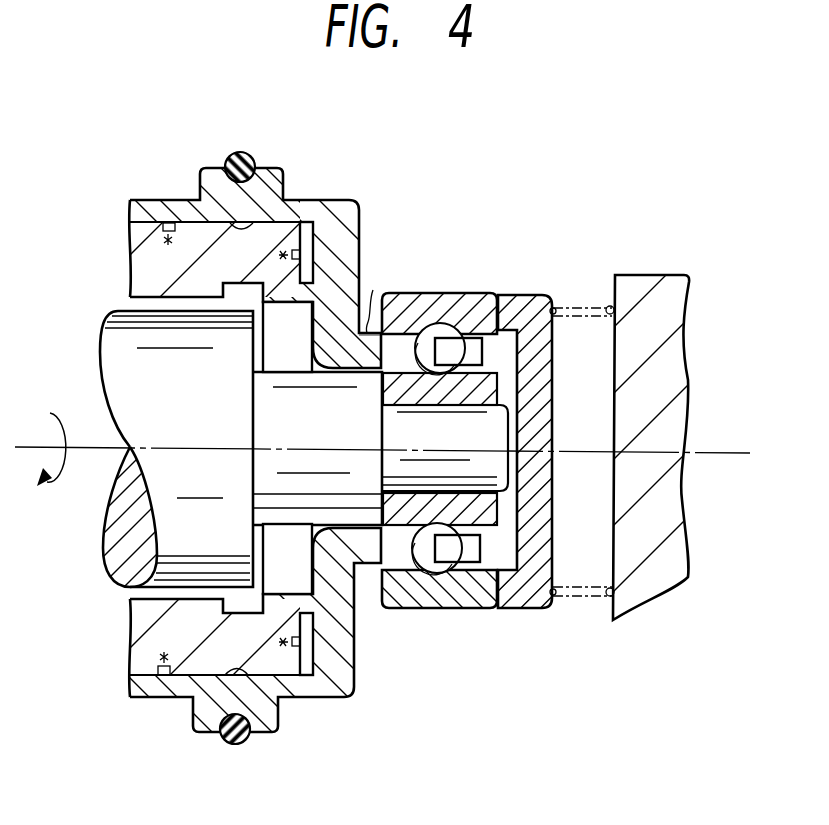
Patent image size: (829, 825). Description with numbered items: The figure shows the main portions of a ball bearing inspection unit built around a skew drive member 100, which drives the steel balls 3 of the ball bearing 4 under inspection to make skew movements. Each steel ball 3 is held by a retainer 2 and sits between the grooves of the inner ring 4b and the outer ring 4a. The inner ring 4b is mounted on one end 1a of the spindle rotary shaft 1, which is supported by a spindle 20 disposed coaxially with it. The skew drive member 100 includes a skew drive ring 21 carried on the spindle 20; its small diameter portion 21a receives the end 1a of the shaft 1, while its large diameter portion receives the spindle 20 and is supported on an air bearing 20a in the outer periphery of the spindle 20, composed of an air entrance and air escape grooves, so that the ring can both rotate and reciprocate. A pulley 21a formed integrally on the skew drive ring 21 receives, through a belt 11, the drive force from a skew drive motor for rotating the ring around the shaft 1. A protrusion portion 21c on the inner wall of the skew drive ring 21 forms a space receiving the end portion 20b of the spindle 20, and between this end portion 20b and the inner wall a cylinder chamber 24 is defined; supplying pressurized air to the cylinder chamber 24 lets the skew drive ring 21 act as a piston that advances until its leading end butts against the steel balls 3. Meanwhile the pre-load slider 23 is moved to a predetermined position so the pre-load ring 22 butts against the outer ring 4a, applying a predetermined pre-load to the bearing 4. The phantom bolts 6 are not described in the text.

The spindle rotary shaft 1 is at (110, 340).
The one end of the spindle rotary shaft 1a is at (484, 440).
The retainer 2 is at (473, 349).
The steel ball 3 is at (456, 547).
The ball bearing 4 is at (441, 288).
The outer ring 4a is at (470, 292).
The inner ring 4b is at (380, 280).
The fastening bolt (phantom) 6 is at (580, 305).
The belt 11 is at (243, 152).
The spindle 20 is at (202, 662).
The air bearing 20a is at (161, 227).
The end portion of the spindle 20b is at (275, 663).
The skew drive ring 21 is at (357, 650).
The small diameter portion 21a is at (226, 160).
The protrusion portion 21c is at (300, 260).
The pre-load ring 22 is at (518, 293).
The pre-load slider 23 is at (647, 276).
The cylinder chamber 24 is at (321, 697).
The skew drive member 100 is at (346, 171).